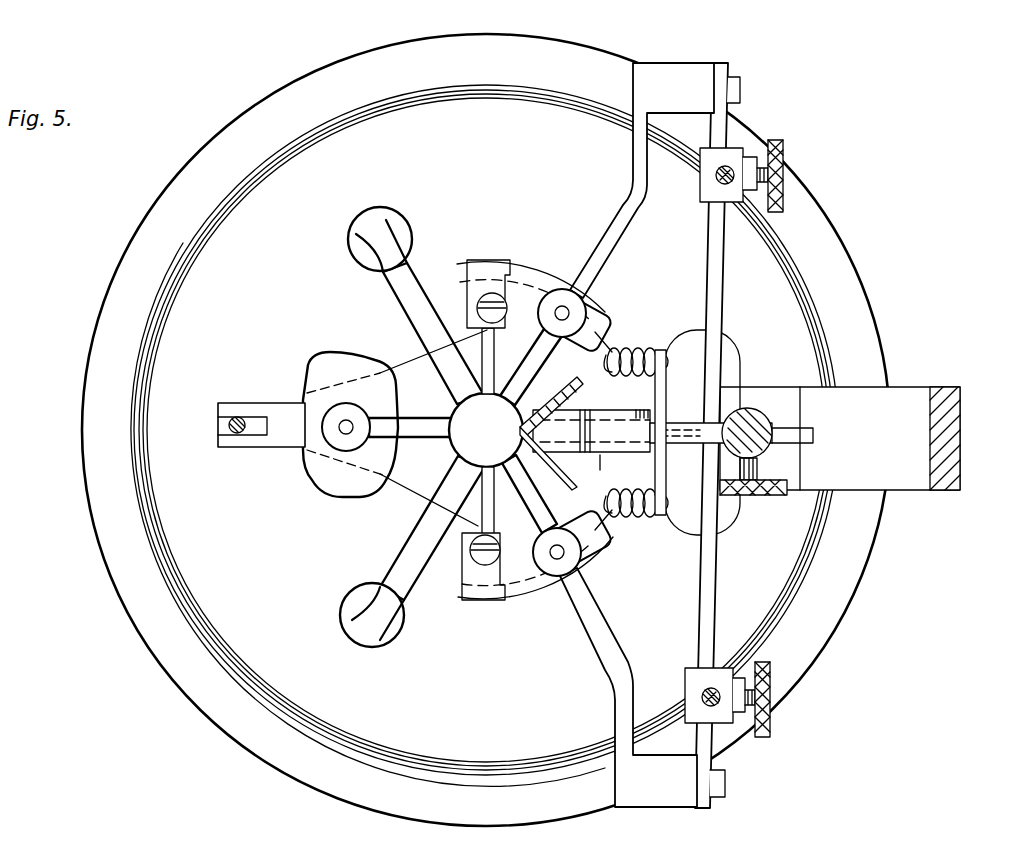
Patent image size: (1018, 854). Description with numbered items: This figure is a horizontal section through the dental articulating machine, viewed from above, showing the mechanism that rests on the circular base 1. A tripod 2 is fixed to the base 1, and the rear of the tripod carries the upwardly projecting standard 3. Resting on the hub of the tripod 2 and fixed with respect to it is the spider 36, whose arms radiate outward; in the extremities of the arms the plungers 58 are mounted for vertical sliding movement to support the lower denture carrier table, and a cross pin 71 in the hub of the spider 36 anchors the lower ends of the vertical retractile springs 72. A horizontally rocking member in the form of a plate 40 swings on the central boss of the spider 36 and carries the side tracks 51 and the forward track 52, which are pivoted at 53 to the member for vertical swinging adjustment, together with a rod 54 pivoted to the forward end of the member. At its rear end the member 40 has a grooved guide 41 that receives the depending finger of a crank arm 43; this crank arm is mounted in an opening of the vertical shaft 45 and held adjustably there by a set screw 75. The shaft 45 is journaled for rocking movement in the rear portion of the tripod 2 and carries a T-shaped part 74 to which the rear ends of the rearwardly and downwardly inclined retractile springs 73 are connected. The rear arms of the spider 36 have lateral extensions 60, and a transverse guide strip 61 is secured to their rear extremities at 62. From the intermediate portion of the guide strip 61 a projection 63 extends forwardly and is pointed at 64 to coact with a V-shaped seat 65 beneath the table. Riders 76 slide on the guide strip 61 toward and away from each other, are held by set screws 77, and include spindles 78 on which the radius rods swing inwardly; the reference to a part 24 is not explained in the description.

The base 1 is at (318, 80).
The tripod 2 is at (395, 215).
The standard 3 is at (962, 462).
The pad 24 is at (668, 390).
The spider 36 is at (409, 428).
The plate 40 is at (413, 485).
The grooved guide 41 is at (597, 450).
The crank arm 43 is at (840, 438).
The vertical shaft 45 is at (752, 426).
The side tracks 51 is at (526, 285).
The forward track 52 is at (351, 360).
The pivot 53 is at (488, 258).
The rod 54 is at (238, 445).
The plungers 58 is at (572, 316).
The lateral extensions 60 is at (619, 222).
The guide strip 61 is at (723, 132).
The securing points 62 is at (745, 80).
The projection 63 is at (551, 433).
The point 64 is at (545, 412).
The V-shaped seat 65 is at (537, 445).
The cross pin 71 is at (497, 365).
The vertical retractile springs 72 is at (478, 300).
The inclined retractile springs 73 is at (630, 352).
The T-shaped part 74 is at (668, 400).
The set screw 75 is at (754, 495).
The riders 76 is at (703, 192).
The set screws 77 is at (786, 178).
The spindles 78 is at (716, 175).